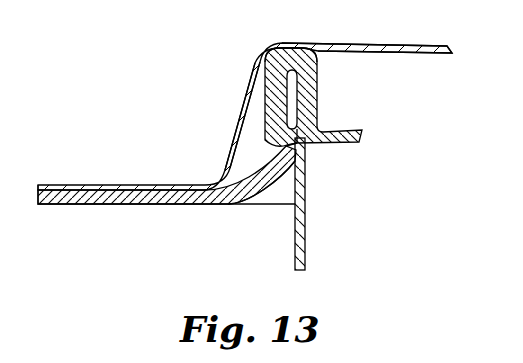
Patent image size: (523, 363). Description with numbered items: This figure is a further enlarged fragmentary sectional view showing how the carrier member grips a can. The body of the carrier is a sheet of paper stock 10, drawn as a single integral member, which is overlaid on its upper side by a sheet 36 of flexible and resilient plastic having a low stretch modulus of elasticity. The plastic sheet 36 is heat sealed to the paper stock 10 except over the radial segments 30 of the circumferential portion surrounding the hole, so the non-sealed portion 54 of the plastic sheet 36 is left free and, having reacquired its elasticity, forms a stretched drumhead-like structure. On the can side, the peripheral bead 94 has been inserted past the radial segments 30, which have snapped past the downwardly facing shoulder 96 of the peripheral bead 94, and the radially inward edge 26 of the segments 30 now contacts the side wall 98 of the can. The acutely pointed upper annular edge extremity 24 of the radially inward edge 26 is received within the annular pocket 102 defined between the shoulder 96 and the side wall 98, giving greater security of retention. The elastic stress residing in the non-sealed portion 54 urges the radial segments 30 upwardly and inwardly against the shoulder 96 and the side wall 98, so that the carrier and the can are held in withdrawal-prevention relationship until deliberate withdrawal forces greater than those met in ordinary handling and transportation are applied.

The sheet of paper stock 10 is at (75, 207).
The sheet of flexible and resilient plastic 36 is at (140, 180).
The downwardly facing shoulder 96 is at (280, 149).
The peripheral bead 94 is at (261, 113).
The non-sealed portion of the plastic sheet 54 is at (369, 41).
The annular pocket 102 is at (313, 133).
The upper annular edge extremity 24 is at (306, 148).
The radially inward edge 26 is at (302, 152).
The radial segments 30 is at (271, 185).
The side wall 98 is at (294, 258).